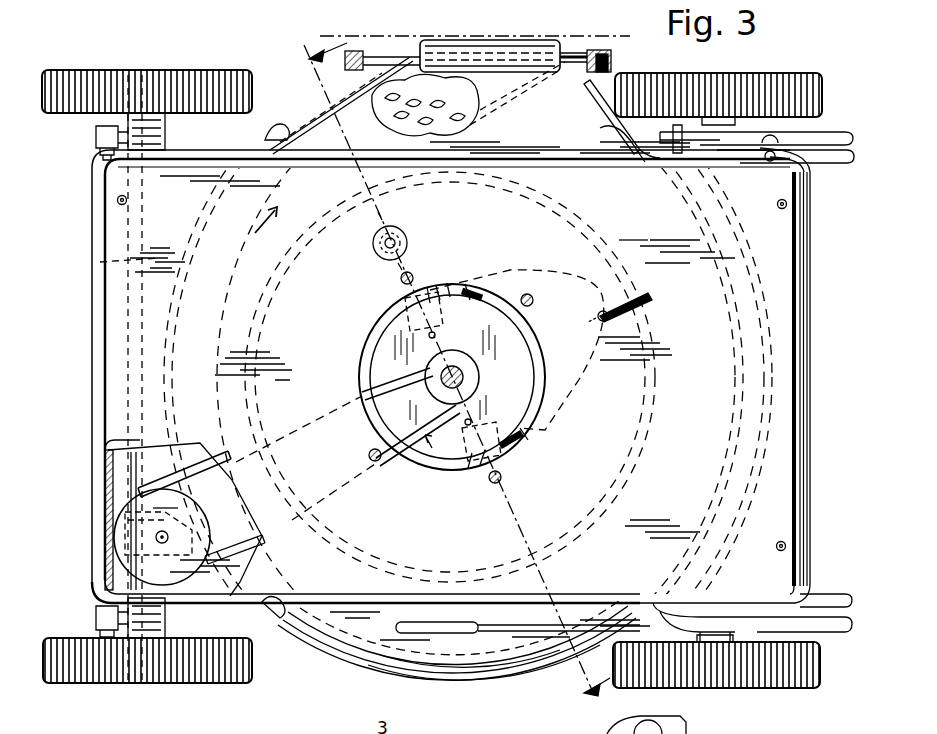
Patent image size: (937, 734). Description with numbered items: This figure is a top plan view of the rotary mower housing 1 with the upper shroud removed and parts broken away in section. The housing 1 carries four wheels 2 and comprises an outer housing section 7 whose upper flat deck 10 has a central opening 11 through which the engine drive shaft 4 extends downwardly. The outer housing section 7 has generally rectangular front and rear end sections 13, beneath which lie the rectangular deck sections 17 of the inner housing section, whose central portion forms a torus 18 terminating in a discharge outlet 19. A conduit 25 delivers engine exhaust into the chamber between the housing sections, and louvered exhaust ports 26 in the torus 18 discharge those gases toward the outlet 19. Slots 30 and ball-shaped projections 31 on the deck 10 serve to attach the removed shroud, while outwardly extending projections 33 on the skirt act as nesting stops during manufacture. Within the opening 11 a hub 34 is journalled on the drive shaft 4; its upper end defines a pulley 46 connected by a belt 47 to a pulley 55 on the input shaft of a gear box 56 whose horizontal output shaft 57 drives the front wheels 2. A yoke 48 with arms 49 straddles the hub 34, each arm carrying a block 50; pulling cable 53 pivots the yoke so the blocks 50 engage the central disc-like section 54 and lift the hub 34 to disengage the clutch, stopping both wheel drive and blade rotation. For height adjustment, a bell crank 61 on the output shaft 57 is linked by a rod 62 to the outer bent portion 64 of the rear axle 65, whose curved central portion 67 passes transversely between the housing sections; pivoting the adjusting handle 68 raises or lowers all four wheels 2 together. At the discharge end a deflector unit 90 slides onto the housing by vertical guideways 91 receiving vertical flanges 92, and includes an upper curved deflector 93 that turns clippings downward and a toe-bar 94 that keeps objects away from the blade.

The housing 1 is at (448, 424).
The wheels 2 is at (130, 70).
The drive shaft 4 is at (458, 360).
The outer housing section 7 is at (92, 335).
The upper flat deck 10 is at (633, 231).
The central opening 11 is at (362, 369).
The front and rear end sections 13 is at (110, 192).
The rectangular deck sections 17 is at (100, 286).
The torus 18 is at (170, 380).
The discharge outlet 19 is at (397, 36).
The conduit 25 is at (407, 240).
The louvered exhaust ports 26 is at (437, 105).
The slots 30 is at (780, 200).
The ball-shaped projections 31 is at (127, 201).
The outwardly extending projections 33 is at (280, 126).
The hub 34 is at (430, 460).
The pulley 46 is at (478, 380).
The belt 47 is at (212, 450).
The yoke 48 is at (598, 390).
The arms 49 is at (458, 284).
The blocks 50 is at (412, 300).
The cable 53 is at (630, 292).
The central disc-like section 54 is at (378, 348).
The pulley 55 is at (162, 537).
The gear box 56 is at (196, 500).
The output shaft 57 is at (104, 461).
The bell crank 61 is at (95, 134).
The rod 62 is at (302, 162).
The outer bent portion 64 is at (795, 165).
The rear axle 65 is at (805, 435).
The curved central portion 67 is at (810, 352).
The adjusting handle 68 is at (510, 624).
The deflector unit 90 is at (495, 37).
The vertical guideways 91 is at (360, 51).
The vertical flanges 92 is at (610, 62).
The curved deflector 93 is at (520, 40).
The toe-bar 94 is at (572, 50).